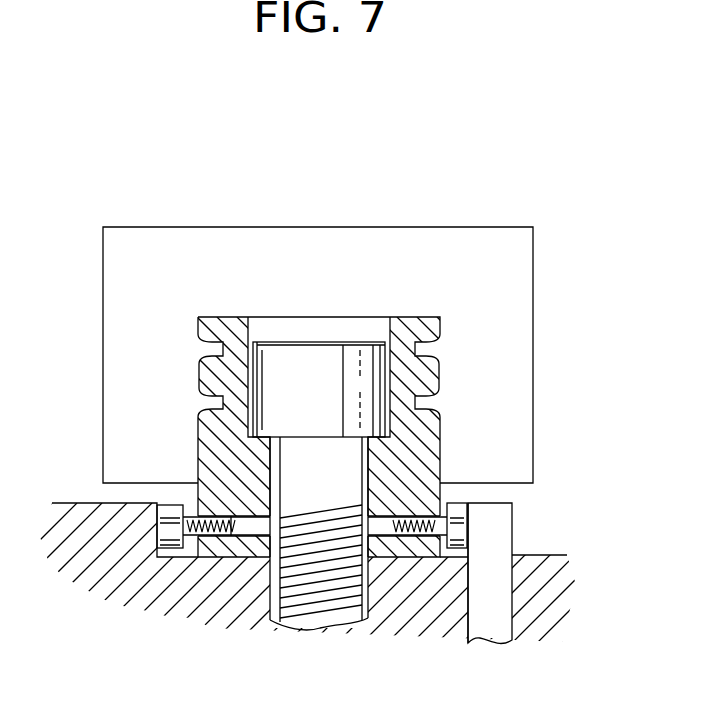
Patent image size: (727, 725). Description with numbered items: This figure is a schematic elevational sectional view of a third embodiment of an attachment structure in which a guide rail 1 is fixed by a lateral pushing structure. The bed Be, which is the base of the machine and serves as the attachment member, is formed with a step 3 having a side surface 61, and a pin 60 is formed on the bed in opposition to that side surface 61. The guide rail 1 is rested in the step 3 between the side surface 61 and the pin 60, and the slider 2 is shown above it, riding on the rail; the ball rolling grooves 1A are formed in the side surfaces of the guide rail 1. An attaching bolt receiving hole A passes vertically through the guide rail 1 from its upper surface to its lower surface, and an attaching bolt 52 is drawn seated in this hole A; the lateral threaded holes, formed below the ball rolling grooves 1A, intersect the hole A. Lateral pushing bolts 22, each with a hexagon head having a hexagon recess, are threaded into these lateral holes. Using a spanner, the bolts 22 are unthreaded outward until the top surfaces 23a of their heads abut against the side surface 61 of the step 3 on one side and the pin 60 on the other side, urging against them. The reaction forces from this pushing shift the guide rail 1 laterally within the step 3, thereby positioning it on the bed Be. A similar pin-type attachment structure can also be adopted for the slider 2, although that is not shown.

The guide rail 1 is at (417, 325).
The ball rolling grooves 1A is at (203, 408).
The slider 2 is at (243, 240).
The step 3 is at (158, 550).
The lateral pushing bolts 22 is at (252, 540).
The fixing bolt 52 is at (320, 614).
The pin 60 is at (503, 532).
The side surface 61 is at (157, 503).
The top surface 23a is at (468, 526).
The attaching bolt receiving hole A is at (345, 332).
The bed Be is at (547, 555).